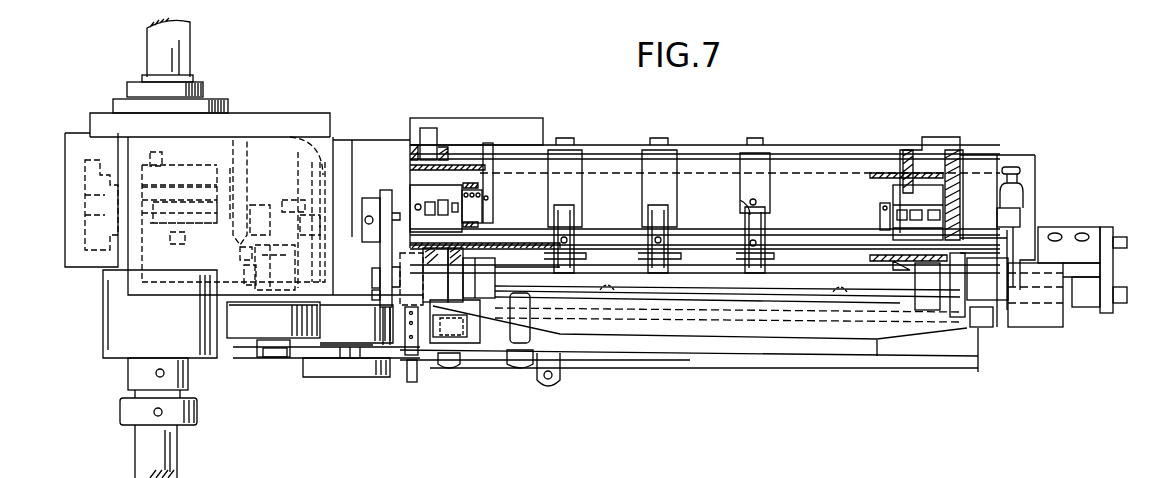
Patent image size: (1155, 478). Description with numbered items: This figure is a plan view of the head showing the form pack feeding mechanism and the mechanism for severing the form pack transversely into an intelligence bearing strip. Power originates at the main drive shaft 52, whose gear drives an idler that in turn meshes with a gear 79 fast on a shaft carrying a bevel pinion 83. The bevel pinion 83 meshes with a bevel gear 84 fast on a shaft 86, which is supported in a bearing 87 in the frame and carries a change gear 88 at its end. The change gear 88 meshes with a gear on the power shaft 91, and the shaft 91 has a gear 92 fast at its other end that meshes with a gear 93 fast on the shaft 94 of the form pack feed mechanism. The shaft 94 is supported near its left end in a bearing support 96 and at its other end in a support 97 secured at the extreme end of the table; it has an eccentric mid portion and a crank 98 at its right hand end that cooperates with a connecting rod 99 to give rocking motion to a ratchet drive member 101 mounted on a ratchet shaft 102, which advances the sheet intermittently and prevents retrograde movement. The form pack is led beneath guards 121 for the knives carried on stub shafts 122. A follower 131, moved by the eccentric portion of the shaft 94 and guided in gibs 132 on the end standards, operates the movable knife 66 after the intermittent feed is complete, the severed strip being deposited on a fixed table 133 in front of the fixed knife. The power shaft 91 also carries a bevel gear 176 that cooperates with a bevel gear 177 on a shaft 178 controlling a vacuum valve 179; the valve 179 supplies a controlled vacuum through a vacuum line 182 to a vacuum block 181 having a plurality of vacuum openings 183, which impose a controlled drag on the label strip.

The main drive shaft 52 is at (172, 450).
The movable knife 66 is at (956, 358).
The gear 79 is at (243, 152).
The bevel pinion 83 is at (300, 152).
The bevel gear 84 is at (233, 152).
The shaft 86 is at (187, 182).
The bearing 87 is at (157, 163).
The change gear 88 is at (88, 168).
The shaft 91 is at (345, 205).
The gear 92 is at (386, 192).
The gear 93 is at (375, 293).
The shaft 94 is at (375, 272).
The bearing support 96 is at (468, 325).
The support 97 is at (1030, 328).
The crank 98 is at (1082, 310).
The connecting rod 99 is at (1115, 303).
The ratchet drive member 101 is at (1058, 226).
The ratchet shaft 102 is at (825, 242).
The guards 121 is at (447, 187).
The stub shafts 122 is at (952, 222).
The follower 131 is at (980, 345).
The gibs 132 is at (462, 362).
The fixed table 133 is at (640, 348).
The bevel gear 176 is at (310, 212).
The bevel gear 177 is at (240, 251).
The shaft 178 is at (245, 270).
The vacuum valve 179 is at (245, 327).
The vacuum block 181 is at (407, 341).
The vacuum line 182 is at (411, 382).
The vacuum openings 183 is at (428, 370).